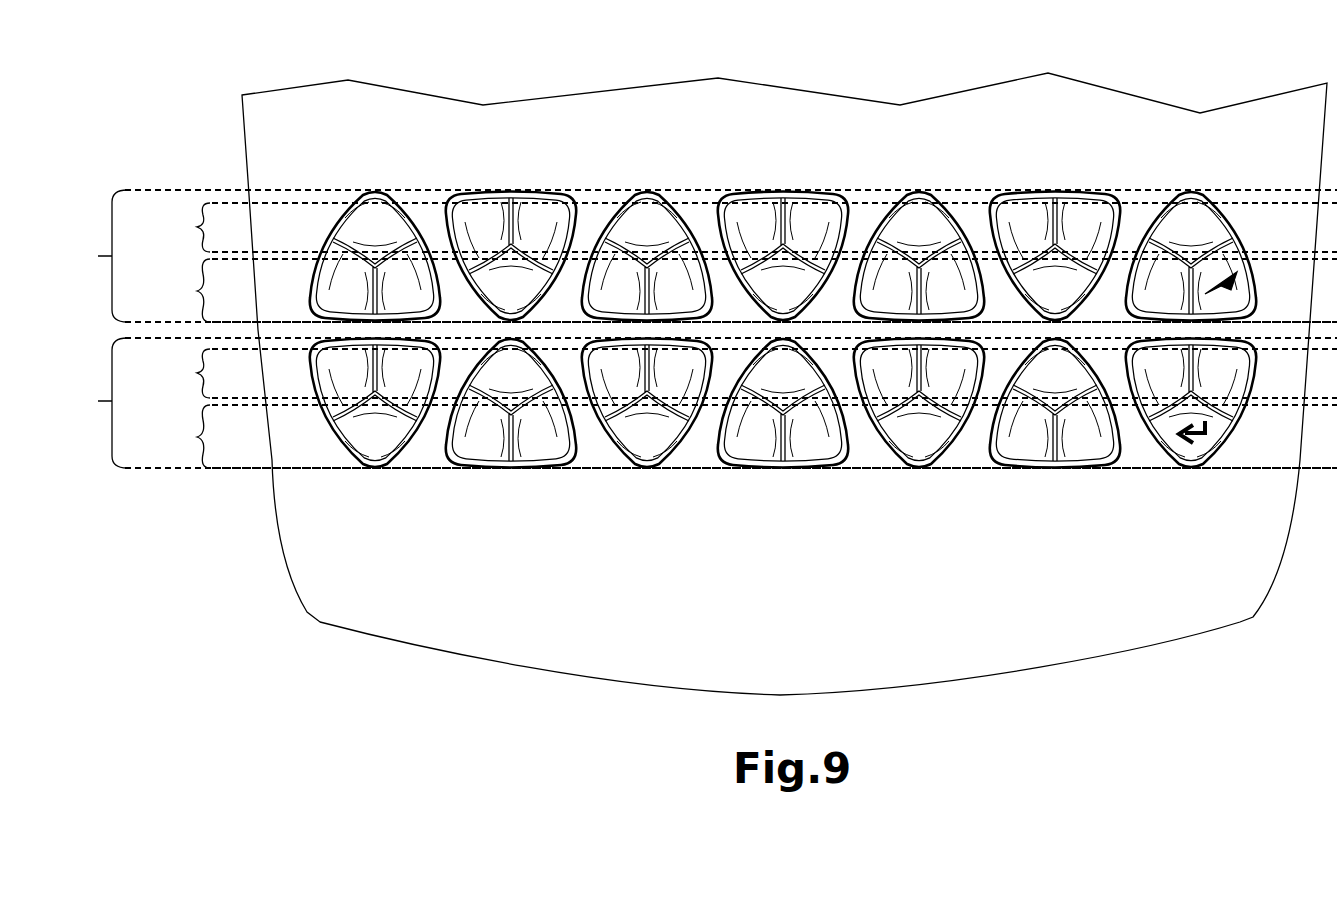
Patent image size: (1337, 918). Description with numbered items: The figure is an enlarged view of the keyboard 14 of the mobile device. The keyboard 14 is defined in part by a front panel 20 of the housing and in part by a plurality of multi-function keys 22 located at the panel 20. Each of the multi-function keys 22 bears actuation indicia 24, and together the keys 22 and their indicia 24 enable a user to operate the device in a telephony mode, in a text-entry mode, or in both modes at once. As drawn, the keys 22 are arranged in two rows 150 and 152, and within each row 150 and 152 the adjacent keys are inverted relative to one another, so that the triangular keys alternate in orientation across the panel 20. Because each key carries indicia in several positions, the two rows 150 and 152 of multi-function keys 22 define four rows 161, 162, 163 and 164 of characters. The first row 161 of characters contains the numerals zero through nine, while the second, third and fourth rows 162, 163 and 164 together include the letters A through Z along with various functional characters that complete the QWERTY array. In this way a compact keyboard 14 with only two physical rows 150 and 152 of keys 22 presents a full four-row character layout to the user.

The keyboard 14 is at (312, 128).
The front panel 20 is at (280, 165).
The multi-function keys 22 is at (660, 203).
The actuation indicia 24 is at (810, 217).
The first row of keys 150 is at (695, 256).
The second row of keys 152 is at (695, 403).
The first row of characters 161 is at (745, 227).
The second row of characters 162 is at (745, 290).
The third row of characters 163 is at (745, 373).
The fourth row of characters 164 is at (745, 436).